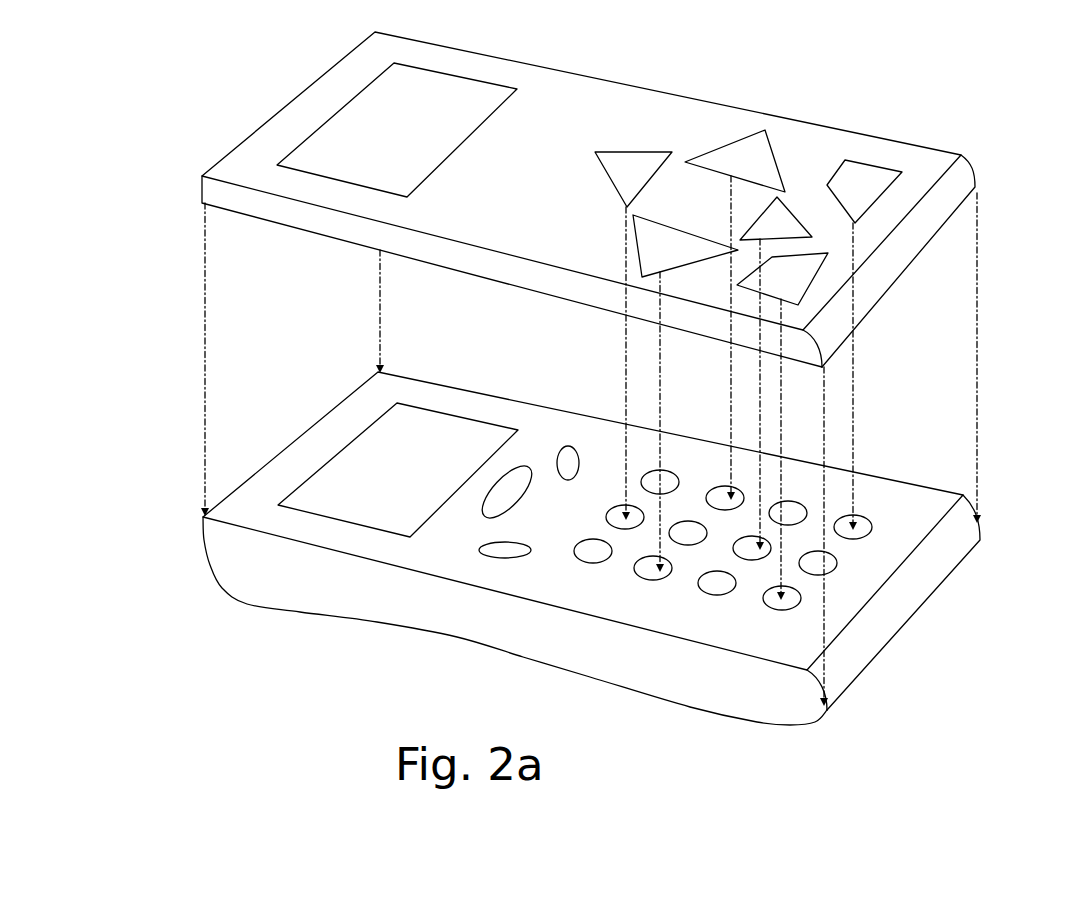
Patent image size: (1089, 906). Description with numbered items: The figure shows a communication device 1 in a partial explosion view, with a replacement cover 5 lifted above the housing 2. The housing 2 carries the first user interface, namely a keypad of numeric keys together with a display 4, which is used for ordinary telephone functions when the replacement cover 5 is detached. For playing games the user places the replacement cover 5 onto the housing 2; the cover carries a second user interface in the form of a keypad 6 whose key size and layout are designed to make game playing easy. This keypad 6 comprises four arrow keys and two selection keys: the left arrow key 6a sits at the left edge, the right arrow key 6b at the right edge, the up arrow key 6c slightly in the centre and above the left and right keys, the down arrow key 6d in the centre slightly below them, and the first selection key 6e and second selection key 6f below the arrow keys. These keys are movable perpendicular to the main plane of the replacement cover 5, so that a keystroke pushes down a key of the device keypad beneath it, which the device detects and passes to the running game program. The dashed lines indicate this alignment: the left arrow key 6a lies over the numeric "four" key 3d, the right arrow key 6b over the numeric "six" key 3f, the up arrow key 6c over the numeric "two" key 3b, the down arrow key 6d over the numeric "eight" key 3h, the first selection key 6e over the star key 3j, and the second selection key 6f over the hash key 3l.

The communication device 1 is at (985, 698).
The housing 2 is at (792, 725).
The numeric key "2" 3b is at (612, 520).
The numeric key "4" 3d is at (652, 580).
The numeric key "6" 3f is at (707, 493).
The numeric key "8" 3h is at (750, 538).
The "*" key 3j is at (787, 608).
The "#" key 3l is at (873, 523).
The display 4 is at (437, 412).
The replacement cover 5 is at (668, 90).
The keypad 6 is at (745, 88).
The left arrow key 6a is at (638, 260).
The right arrow key 6b is at (733, 137).
The up arrow key 6c is at (612, 190).
The down arrow key 6d is at (748, 218).
The first selection key 6e is at (808, 283).
The second selection key 6f is at (868, 168).